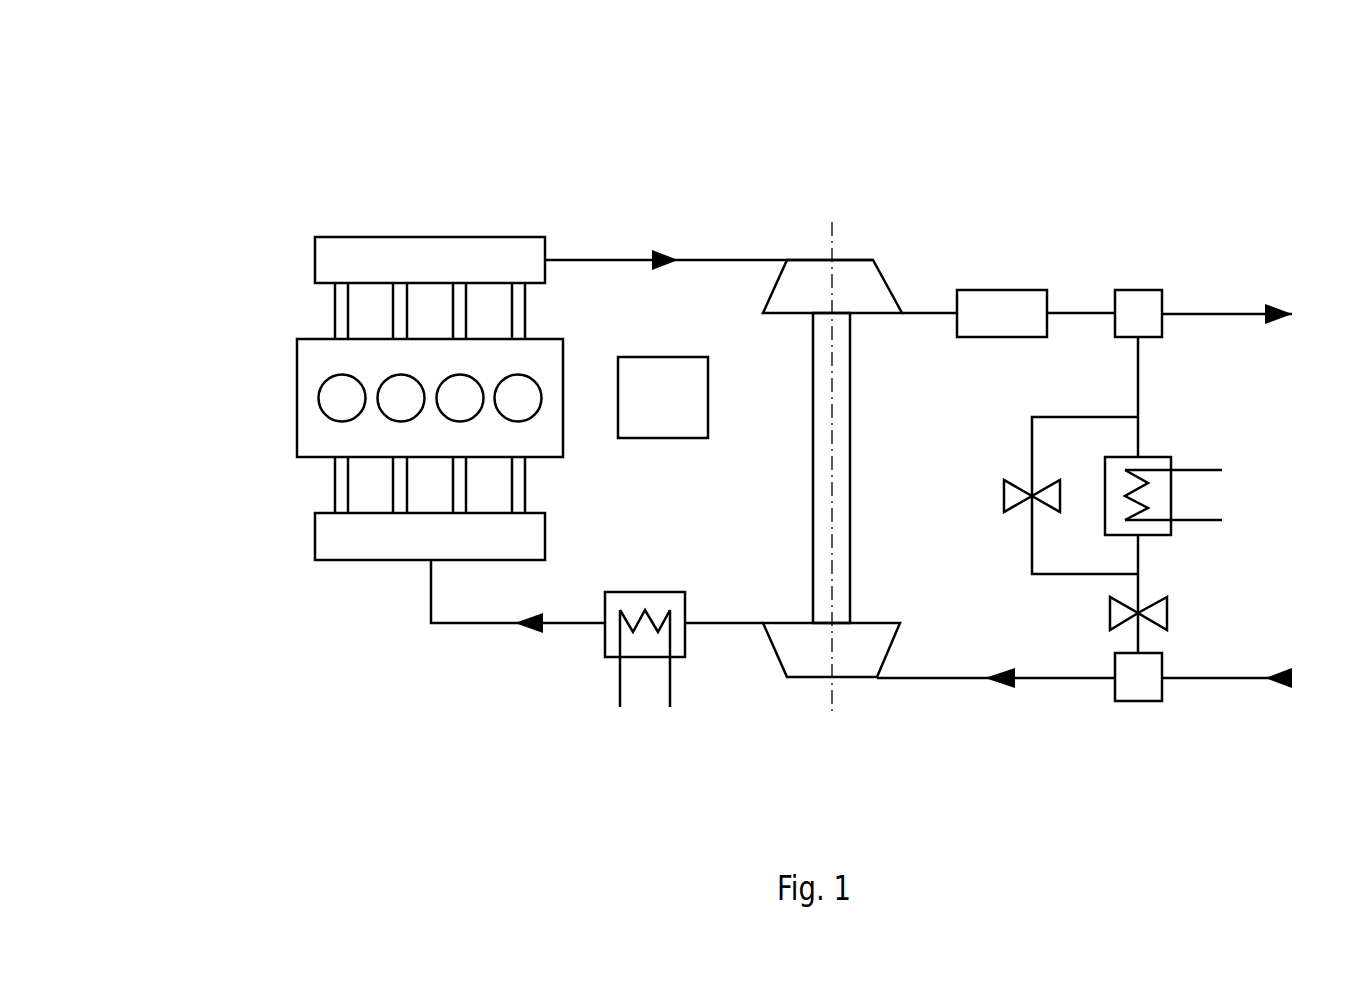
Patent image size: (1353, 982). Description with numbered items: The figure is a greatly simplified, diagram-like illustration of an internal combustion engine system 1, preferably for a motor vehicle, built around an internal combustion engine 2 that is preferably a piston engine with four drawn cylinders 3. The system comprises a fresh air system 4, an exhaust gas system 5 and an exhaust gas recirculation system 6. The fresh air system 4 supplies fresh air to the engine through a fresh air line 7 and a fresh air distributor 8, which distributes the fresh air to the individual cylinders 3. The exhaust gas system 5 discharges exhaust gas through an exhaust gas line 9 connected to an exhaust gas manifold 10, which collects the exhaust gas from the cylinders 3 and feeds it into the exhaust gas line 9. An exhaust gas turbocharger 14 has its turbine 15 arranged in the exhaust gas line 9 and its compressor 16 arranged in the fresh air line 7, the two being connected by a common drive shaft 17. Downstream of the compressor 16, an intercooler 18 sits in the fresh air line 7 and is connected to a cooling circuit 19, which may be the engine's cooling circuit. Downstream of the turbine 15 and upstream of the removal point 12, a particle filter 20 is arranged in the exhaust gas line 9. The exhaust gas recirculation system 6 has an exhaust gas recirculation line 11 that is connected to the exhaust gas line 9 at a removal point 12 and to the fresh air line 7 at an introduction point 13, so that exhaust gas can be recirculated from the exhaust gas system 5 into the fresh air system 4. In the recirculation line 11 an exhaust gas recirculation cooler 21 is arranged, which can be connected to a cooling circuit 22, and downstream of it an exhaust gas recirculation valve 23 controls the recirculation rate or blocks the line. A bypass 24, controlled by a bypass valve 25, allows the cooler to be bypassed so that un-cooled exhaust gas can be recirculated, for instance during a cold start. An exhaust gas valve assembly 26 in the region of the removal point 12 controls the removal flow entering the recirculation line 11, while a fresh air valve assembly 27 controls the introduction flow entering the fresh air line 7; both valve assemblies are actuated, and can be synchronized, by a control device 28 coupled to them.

The internal combustion engine system 1 is at (310, 173).
The internal combustion engine 2 is at (297, 393).
The cylinders 3 is at (526, 412).
The fresh air system 4 is at (715, 625).
The exhaust gas system 5 is at (695, 259).
The exhaust gas recirculation system 6 is at (1138, 372).
The fresh air line 7 is at (488, 630).
The fresh air distributor 8 is at (364, 560).
The exhaust gas line 9 is at (607, 258).
The exhaust gas manifold 10 is at (430, 237).
The exhaust gas recirculation line 11 is at (1138, 432).
The removal point 12 is at (1175, 297).
The introduction point 13 is at (1175, 700).
The exhaust gas turbocharger 14 is at (891, 285).
The turbine 15 is at (855, 259).
The compressor 16 is at (857, 680).
The common drive shaft 17 is at (850, 550).
The intercooler 18 is at (645, 592).
The cooling circuit 19 is at (618, 683).
The particle filter 20 is at (1002, 290).
The exhaust gas recirculation cooler 21 is at (1171, 497).
The cooling circuit 22 is at (1195, 520).
The exhaust gas recirculation valve 23 is at (1110, 613).
The bypass 24 is at (1032, 432).
The bypass valve 25 is at (1004, 496).
The exhaust gas valve assembly 26 is at (1137, 290).
The fresh air valve assembly 27 is at (1138, 701).
The control device 28 is at (648, 412).